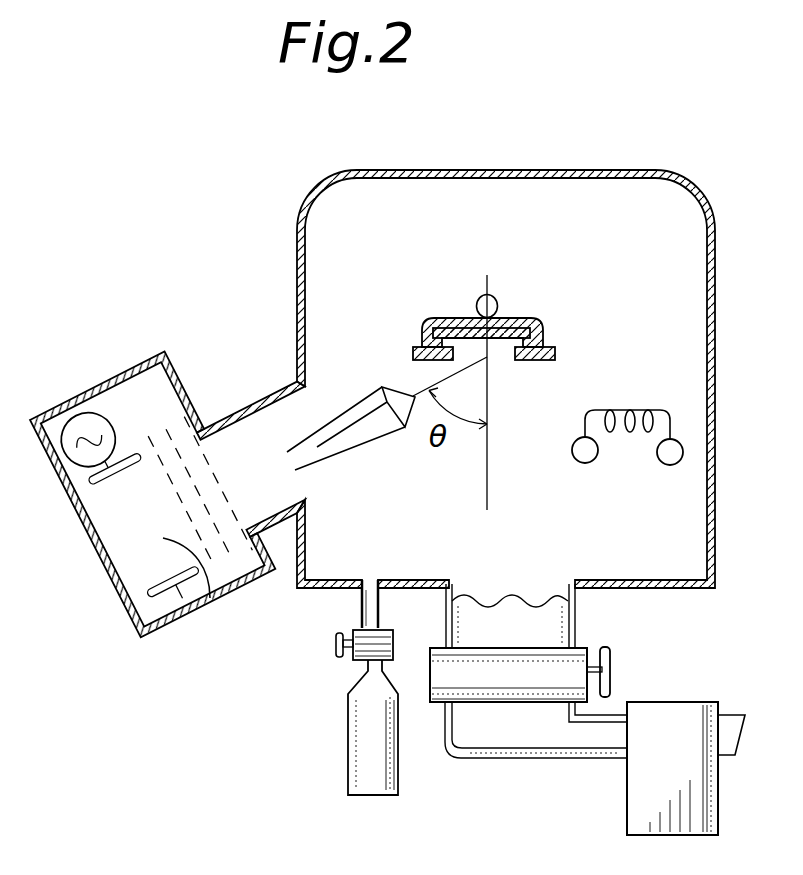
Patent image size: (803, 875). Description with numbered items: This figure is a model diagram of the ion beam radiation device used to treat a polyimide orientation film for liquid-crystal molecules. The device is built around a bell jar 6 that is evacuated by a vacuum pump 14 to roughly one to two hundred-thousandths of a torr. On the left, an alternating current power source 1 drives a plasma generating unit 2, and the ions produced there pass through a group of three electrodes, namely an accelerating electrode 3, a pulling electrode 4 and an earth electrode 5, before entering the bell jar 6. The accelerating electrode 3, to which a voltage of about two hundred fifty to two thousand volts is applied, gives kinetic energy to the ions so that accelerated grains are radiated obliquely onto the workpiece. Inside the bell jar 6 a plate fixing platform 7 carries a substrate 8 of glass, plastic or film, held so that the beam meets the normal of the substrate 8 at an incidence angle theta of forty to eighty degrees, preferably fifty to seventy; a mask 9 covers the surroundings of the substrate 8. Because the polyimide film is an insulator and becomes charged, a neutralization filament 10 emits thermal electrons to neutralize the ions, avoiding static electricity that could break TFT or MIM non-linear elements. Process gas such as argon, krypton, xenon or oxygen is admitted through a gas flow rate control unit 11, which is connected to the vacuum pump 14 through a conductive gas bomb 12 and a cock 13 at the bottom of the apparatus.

The alternating current power source 1 is at (87, 414).
The plasma generating unit 2 is at (163, 538).
The accelerating electrode 3 is at (147, 437).
The pulling electrode 4 is at (165, 430).
The earth electrode 5 is at (185, 413).
The bell jar 6 is at (671, 168).
The plate fixing platform 7 is at (455, 318).
The substrate 8 is at (520, 317).
The mask 9 is at (413, 348).
The neutralization filament 10 is at (662, 408).
The gas flow rate control unit 11 is at (338, 652).
The conductive gas bomb 12 is at (348, 757).
The cock 13 is at (612, 657).
The vacuum pump 14 is at (707, 810).